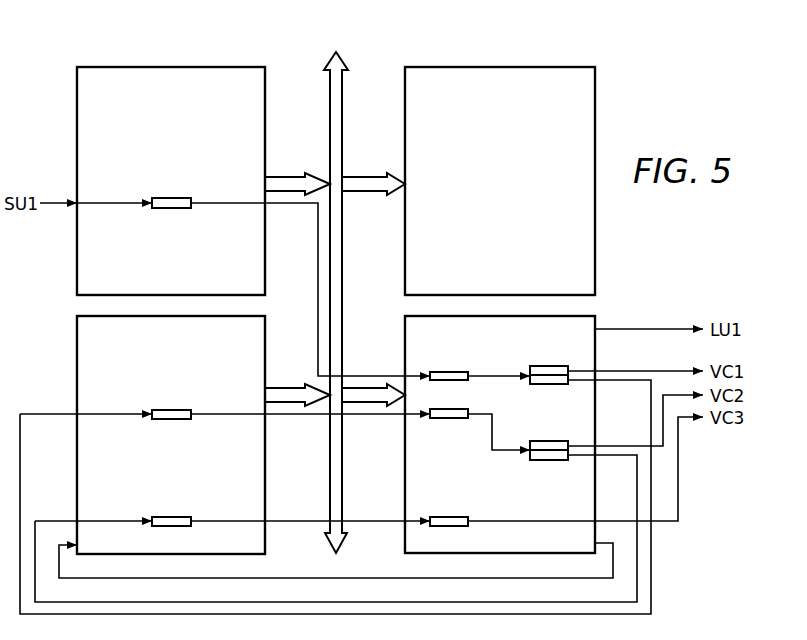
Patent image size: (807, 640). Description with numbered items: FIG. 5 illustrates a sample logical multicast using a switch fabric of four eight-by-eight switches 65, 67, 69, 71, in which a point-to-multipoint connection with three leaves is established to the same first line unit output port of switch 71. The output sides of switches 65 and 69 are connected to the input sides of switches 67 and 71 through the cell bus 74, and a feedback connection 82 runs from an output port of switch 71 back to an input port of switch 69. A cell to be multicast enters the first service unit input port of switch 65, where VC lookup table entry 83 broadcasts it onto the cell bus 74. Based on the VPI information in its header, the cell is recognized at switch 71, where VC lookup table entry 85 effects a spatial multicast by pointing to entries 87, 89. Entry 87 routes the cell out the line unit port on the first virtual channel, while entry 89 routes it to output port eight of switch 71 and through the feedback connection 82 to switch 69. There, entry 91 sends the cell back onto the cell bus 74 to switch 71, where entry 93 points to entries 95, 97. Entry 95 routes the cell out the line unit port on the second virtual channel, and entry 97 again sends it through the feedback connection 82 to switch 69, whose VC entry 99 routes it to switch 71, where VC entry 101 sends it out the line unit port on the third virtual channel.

The switch 65 is at (172, 67).
The switch 67 is at (500, 67).
The switch 69 is at (77, 368).
The switch 71 is at (405, 480).
The cell bus 74 is at (345, 297).
The feedback connection 82 is at (381, 578).
The VC lookup table entry 83 is at (172, 198).
The VC lookup table entry 85 is at (448, 371).
The entry 87 is at (548, 366).
The entry 89 is at (556, 384).
The entry 91 is at (172, 409).
The entry 93 is at (445, 419).
The entry 95 is at (538, 441).
The entry 97 is at (548, 460).
The VC entry 99 is at (172, 517).
The VC entry 101 is at (458, 516).